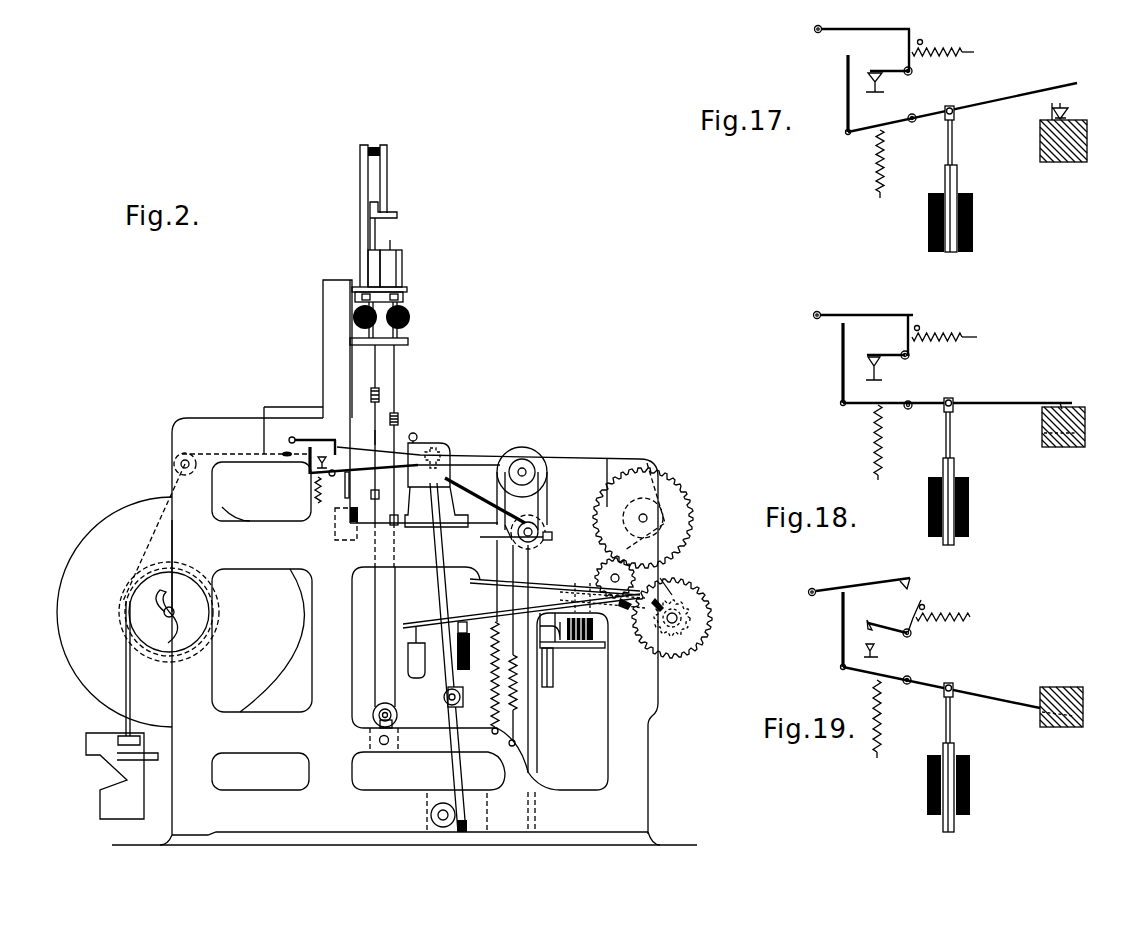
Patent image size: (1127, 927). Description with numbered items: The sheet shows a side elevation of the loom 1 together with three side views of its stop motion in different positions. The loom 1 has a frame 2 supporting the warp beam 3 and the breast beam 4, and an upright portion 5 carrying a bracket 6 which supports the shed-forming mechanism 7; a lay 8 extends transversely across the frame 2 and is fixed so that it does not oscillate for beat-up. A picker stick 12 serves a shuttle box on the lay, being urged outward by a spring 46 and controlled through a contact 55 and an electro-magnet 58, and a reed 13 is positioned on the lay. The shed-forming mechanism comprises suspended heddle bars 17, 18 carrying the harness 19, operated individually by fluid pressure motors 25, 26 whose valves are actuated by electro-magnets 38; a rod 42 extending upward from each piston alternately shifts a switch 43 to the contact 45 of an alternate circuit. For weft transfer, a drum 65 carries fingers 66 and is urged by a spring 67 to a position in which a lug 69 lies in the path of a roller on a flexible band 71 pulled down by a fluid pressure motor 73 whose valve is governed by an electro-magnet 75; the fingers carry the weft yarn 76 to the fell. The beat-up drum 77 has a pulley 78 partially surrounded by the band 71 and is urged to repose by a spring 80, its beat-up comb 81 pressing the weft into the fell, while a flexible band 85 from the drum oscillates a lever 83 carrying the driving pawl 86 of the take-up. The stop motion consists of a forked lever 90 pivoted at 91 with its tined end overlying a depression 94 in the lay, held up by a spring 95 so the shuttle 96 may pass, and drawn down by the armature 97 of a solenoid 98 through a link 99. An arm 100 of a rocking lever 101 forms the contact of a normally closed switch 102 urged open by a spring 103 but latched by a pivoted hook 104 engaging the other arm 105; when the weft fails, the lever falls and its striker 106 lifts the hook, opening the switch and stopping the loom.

In FIG. 2, the loom 1 is at (661, 689).
In FIG. 2, the frame 2 is at (642, 757).
In FIG. 2, the warp beam 3 is at (142, 610).
In FIG. 2, the breast beam 4 is at (662, 470).
In FIG. 2, the upright portion 5 is at (322, 298).
In FIG. 2, the bracket 6 is at (408, 292).
In FIG. 2, the shed-forming mechanism 7 is at (396, 372).
In FIG. 17, the lay 8 is at (1089, 148).
In FIG. 18, the lay 8 is at (1087, 440).
In FIG. 19, the lay 8 is at (1073, 688).
In FIG. 2, the lay 8 is at (440, 466).
In FIG. 2, the picker stick 12 is at (441, 596).
In FIG. 2, the reed 13 is at (418, 438).
In FIG. 2, the heddle bar 17 is at (380, 395).
In FIG. 2, the heddle bar 18 is at (399, 419).
In FIG. 2, the harness 19 is at (370, 438).
In FIG. 2, the fluid pressure motor 25 is at (401, 262).
In FIG. 2, the fluid pressure motor 26 is at (372, 264).
In FIG. 2, the electro-magnet 38 is at (411, 315).
In FIG. 2, the rod 42 is at (378, 236).
In FIG. 2, the switch 43 is at (388, 183).
In FIG. 2, the contact 45 is at (376, 147).
In FIG. 2, the spring 46 is at (431, 816).
In FIG. 2, the contact 55 is at (314, 493).
In FIG. 2, the electro-magnet 58 is at (474, 646).
In FIG. 2, the drum 65 is at (537, 527).
In FIG. 2, the fingers 66 is at (472, 494).
In FIG. 2, the spring 67 is at (690, 599).
In FIG. 2, the lug 69 is at (552, 533).
In FIG. 2, the flexible band 71 is at (512, 455).
In FIG. 2, the fluid pressure motor 73 is at (555, 672).
In FIG. 2, the electro-magnet 75 is at (580, 642).
In FIG. 18, the weft yarn 76 is at (1061, 406).
In FIG. 2, the drum 77 is at (525, 462).
In FIG. 2, the pulley 78 is at (540, 460).
In FIG. 2, the spring 80 is at (486, 678).
In FIG. 2, the beat-up comb 81 is at (524, 445).
In FIG. 2, the lever 83 is at (520, 580).
In FIG. 2, the flexible band 85 is at (512, 525).
In FIG. 2, the driving pawl 86 is at (626, 608).
In FIG. 17, the forked lever 90 is at (986, 106).
In FIG. 18, the forked lever 90 is at (988, 401).
In FIG. 19, the forked lever 90 is at (980, 695).
In FIG. 2, the forked lever 90 is at (360, 469).
In FIG. 17, the pivot 91 is at (914, 114).
In FIG. 18, the pivot 91 is at (911, 401).
In FIG. 19, the pivot 91 is at (912, 677).
In FIG. 2, the pivot 91 is at (335, 484).
In FIG. 18, the depression 94 is at (1046, 433).
In FIG. 19, the depression 94 is at (1043, 714).
In FIG. 17, the spring 95 is at (877, 173).
In FIG. 18, the spring 95 is at (876, 443).
In FIG. 19, the spring 95 is at (883, 728).
In FIG. 17, the shuttle 96 is at (1070, 110).
In FIG. 17, the armature 97 is at (960, 180).
In FIG. 18, the armature 97 is at (956, 470).
In FIG. 19, the armature 97 is at (956, 756).
In FIG. 17, the solenoid 98 is at (976, 226).
In FIG. 18, the solenoid 98 is at (967, 510).
In FIG. 19, the solenoid 98 is at (970, 791).
In FIG. 2, the solenoid 98 is at (346, 520).
In FIG. 17, the link 99 is at (956, 150).
In FIG. 18, the link 99 is at (953, 445).
In FIG. 19, the link 99 is at (951, 731).
In FIG. 17, the arm 100 is at (886, 70).
In FIG. 18, the arm 100 is at (890, 345).
In FIG. 19, the arm 100 is at (887, 628).
In FIG. 17, the rocking lever 101 is at (914, 71).
In FIG. 18, the rocking lever 101 is at (905, 355).
In FIG. 19, the rocking lever 101 is at (907, 633).
In FIG. 17, the switch 102 is at (884, 84).
In FIG. 18, the switch 102 is at (883, 367).
In FIG. 19, the switch 102 is at (880, 646).
In FIG. 17, the spring 103 is at (946, 50).
In FIG. 18, the spring 103 is at (947, 335).
In FIG. 19, the spring 103 is at (950, 614).
In FIG. 17, the pivoted hook 104 is at (896, 19).
In FIG. 18, the pivoted hook 104 is at (892, 303).
In FIG. 19, the pivoted hook 104 is at (883, 581).
In FIG. 2, the pivoted hook 104 is at (320, 433).
In FIG. 17, the arm 105 is at (922, 40).
In FIG. 18, the arm 105 is at (919, 326).
In FIG. 19, the arm 105 is at (922, 603).
In FIG. 17, the striker 106 is at (841, 80).
In FIG. 18, the striker 106 is at (841, 352).
In FIG. 19, the striker 106 is at (841, 625).
In FIG. 2, the striker 106 is at (308, 468).